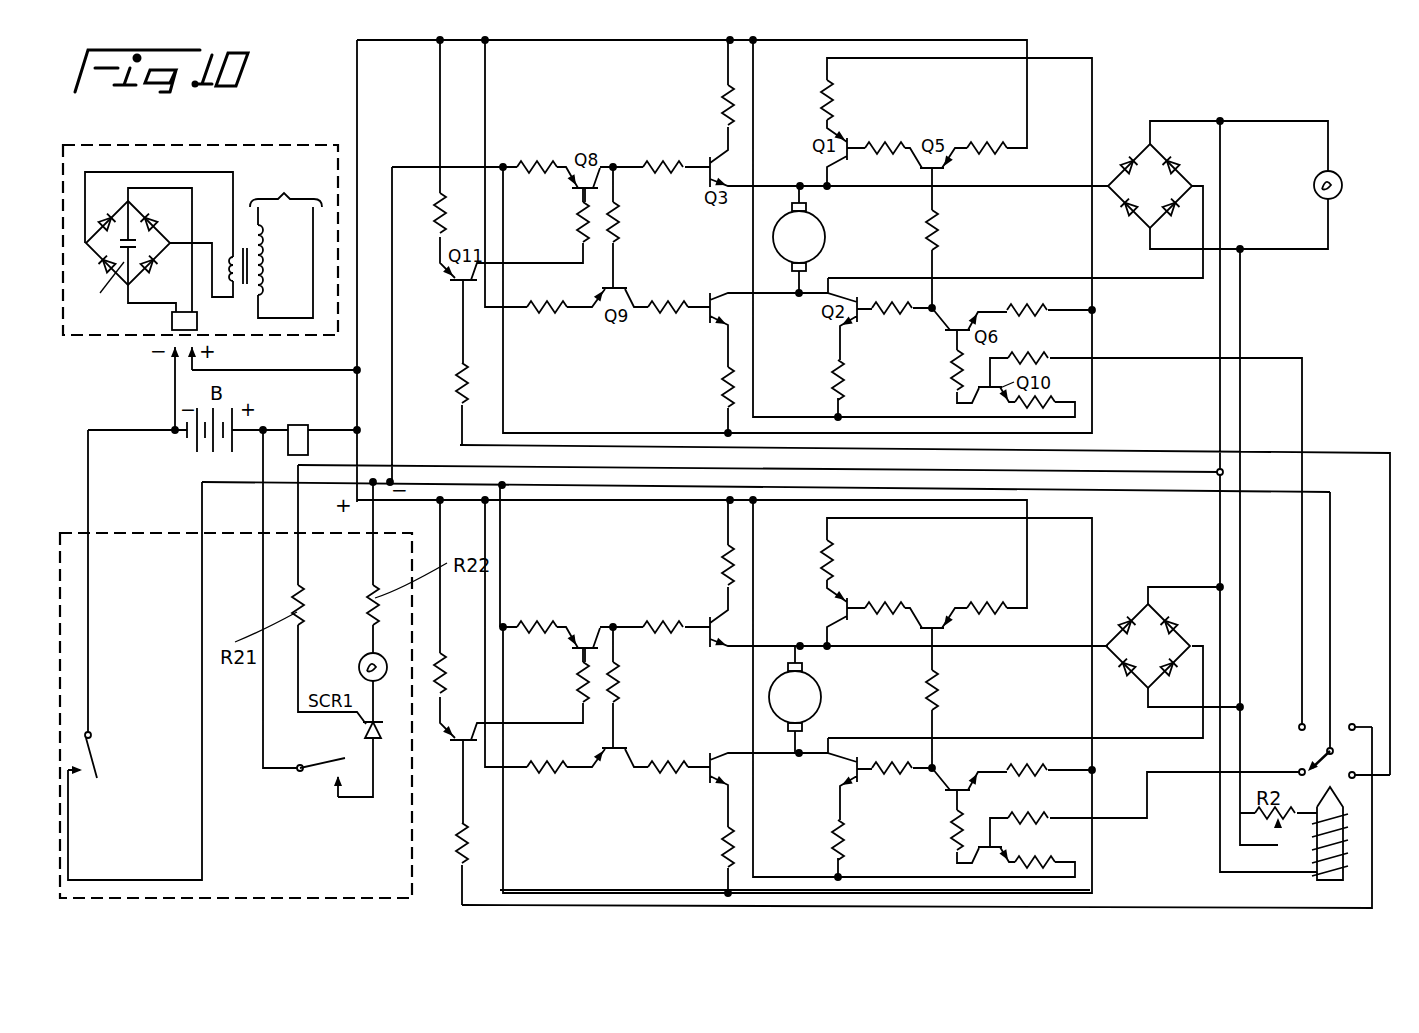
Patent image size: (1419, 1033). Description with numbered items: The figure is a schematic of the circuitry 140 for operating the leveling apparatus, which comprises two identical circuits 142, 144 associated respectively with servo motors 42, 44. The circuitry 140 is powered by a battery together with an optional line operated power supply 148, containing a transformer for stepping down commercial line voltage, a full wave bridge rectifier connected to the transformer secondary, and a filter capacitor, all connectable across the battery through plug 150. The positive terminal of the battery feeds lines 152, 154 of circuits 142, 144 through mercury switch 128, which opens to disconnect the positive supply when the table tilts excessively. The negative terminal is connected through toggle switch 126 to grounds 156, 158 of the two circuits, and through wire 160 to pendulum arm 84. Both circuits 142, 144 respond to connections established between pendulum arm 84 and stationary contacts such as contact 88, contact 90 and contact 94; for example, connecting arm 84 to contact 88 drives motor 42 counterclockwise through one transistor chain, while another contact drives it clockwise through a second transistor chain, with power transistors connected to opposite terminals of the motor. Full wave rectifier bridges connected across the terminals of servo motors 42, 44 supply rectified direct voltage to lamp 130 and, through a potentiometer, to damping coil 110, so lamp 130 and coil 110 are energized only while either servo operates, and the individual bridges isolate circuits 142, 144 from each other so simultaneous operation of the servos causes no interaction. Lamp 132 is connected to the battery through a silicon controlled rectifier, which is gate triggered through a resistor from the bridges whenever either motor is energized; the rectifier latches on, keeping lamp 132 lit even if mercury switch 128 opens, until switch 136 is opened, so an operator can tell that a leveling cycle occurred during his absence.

The line operated power supply 148 is at (255, 143).
The plug 150 is at (172, 325).
The mercury switch 128 is at (297, 425).
The toggle switch 126 is at (97, 757).
The switch 136 is at (327, 760).
The lamp 132 is at (360, 663).
The line 152 is at (580, 43).
The line 154 is at (548, 503).
The ground 156 is at (613, 486).
The ground 158 is at (563, 890).
The wire 160 is at (1332, 575).
The servo motor 42 is at (815, 238).
The servo motor 44 is at (815, 698).
The circuit 142 is at (1138, 91).
The circuit 144 is at (1130, 546).
The circuitry 140 is at (1360, 117).
The lamp 130 is at (1340, 195).
The stationary contact 88 is at (1300, 722).
The stationary contact 90 is at (1298, 771).
The pendulum arm 84 is at (1305, 760).
The stationary contact 94 is at (1357, 722).
The damping coil 110 is at (1340, 842).